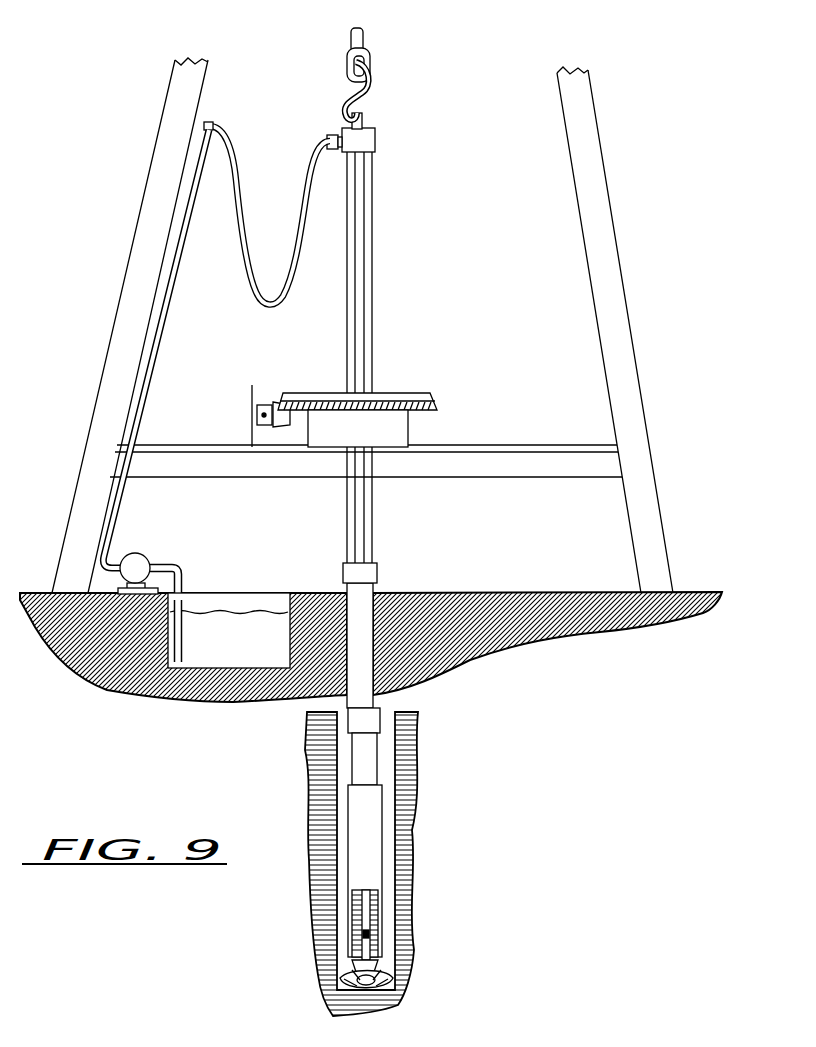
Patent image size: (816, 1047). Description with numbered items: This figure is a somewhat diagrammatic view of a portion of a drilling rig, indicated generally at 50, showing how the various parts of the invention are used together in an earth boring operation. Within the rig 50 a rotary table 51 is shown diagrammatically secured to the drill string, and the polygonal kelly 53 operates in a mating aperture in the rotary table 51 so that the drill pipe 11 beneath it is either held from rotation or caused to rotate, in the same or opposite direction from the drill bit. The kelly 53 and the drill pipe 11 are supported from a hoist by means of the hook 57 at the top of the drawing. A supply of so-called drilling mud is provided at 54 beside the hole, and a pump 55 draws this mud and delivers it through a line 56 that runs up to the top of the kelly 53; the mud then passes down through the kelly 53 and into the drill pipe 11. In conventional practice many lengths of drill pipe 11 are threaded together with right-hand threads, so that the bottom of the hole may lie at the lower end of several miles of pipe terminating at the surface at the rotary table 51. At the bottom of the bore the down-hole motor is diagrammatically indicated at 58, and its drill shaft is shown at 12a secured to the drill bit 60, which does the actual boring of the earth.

The rig 50 is at (613, 223).
The rotary table 51 is at (403, 430).
The polygonal kelly 53 is at (358, 282).
The supply of drilling mud 54 is at (227, 620).
The pump 55 is at (137, 553).
The line 56 is at (162, 314).
The hook 57 is at (367, 100).
The down-hole motor 58 is at (372, 818).
The drill pipe 11 is at (363, 603).
The drill shaft 12a is at (362, 910).
The drill bit 60 is at (390, 977).